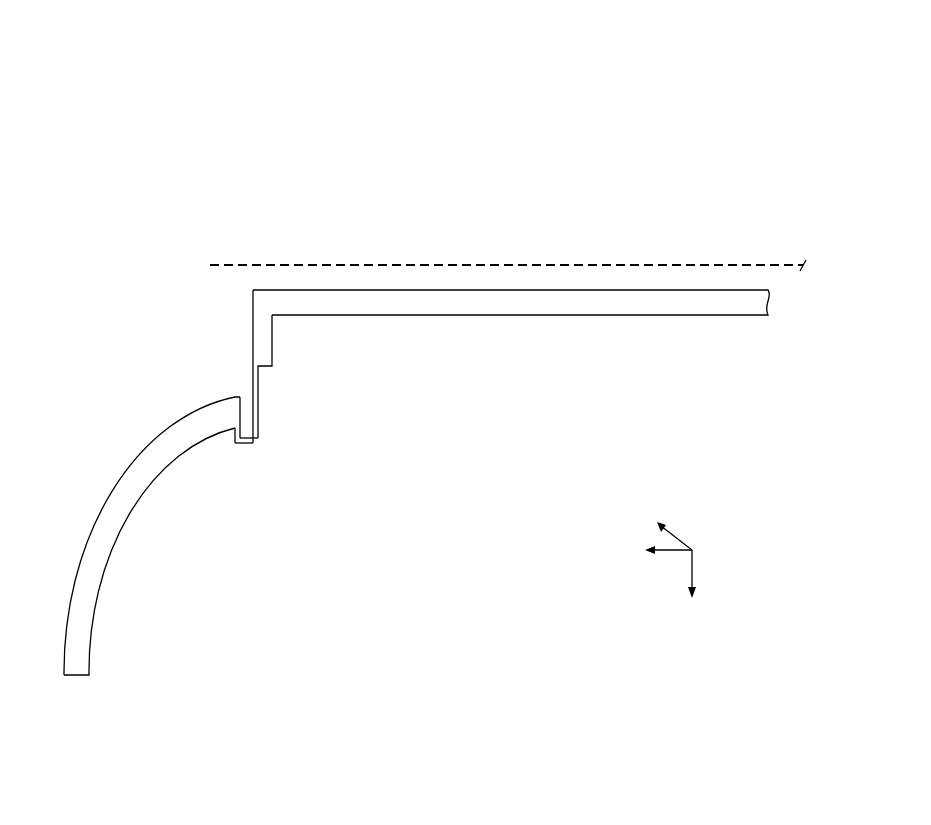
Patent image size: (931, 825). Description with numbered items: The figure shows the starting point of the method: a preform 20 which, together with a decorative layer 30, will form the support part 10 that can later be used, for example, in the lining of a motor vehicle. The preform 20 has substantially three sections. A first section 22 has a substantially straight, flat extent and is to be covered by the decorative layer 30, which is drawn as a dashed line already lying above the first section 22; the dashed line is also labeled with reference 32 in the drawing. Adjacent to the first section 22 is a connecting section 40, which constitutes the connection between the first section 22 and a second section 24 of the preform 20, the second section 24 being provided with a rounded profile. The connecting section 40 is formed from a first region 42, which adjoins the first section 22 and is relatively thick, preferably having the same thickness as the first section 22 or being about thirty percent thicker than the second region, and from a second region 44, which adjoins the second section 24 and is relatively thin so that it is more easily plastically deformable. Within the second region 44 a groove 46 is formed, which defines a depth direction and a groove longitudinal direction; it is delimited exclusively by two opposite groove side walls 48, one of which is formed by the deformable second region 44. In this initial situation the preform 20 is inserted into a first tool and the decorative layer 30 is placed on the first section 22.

The support part 10 is at (276, 95).
The preform 20 is at (378, 371).
The first section 22 is at (631, 310).
The second section 24 is at (90, 583).
The decorative layer 30 is at (672, 266).
The centerline 32 is at (230, 264).
The connecting section 40 is at (215, 377).
The first region 42 is at (262, 340).
The second region 44 is at (257, 394).
The groove 46 is at (258, 420).
The groove side walls 48 is at (246, 424).